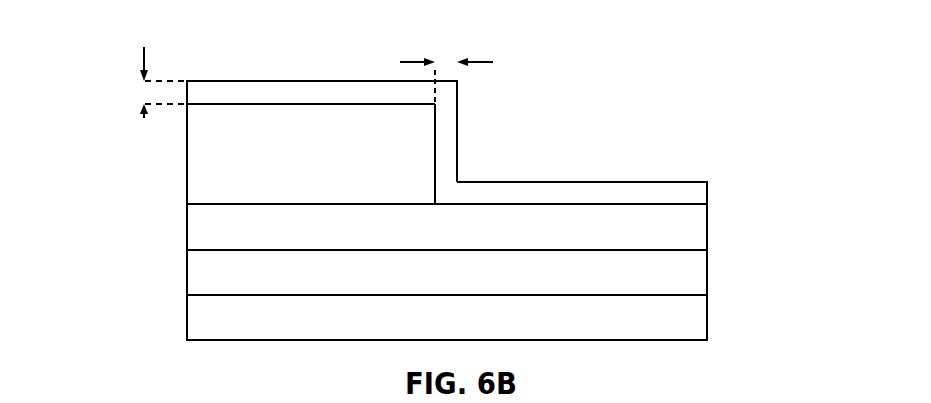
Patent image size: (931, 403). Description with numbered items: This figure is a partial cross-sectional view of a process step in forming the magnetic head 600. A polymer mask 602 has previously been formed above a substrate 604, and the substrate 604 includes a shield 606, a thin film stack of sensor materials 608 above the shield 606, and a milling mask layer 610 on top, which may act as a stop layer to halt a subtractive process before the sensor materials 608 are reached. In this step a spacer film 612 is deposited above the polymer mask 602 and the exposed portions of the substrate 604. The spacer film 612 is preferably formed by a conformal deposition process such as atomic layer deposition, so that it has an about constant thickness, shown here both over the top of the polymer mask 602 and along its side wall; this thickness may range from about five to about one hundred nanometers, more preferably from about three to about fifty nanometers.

The magnetic head 600 is at (90, 61).
The polymer mask 602 is at (328, 166).
The substrate 604 is at (458, 273).
The shield 606 is at (707, 321).
The thin film stack of sensor materials 608 is at (707, 278).
The milling mask layer 610 is at (707, 229).
The spacer film 612 is at (707, 188).